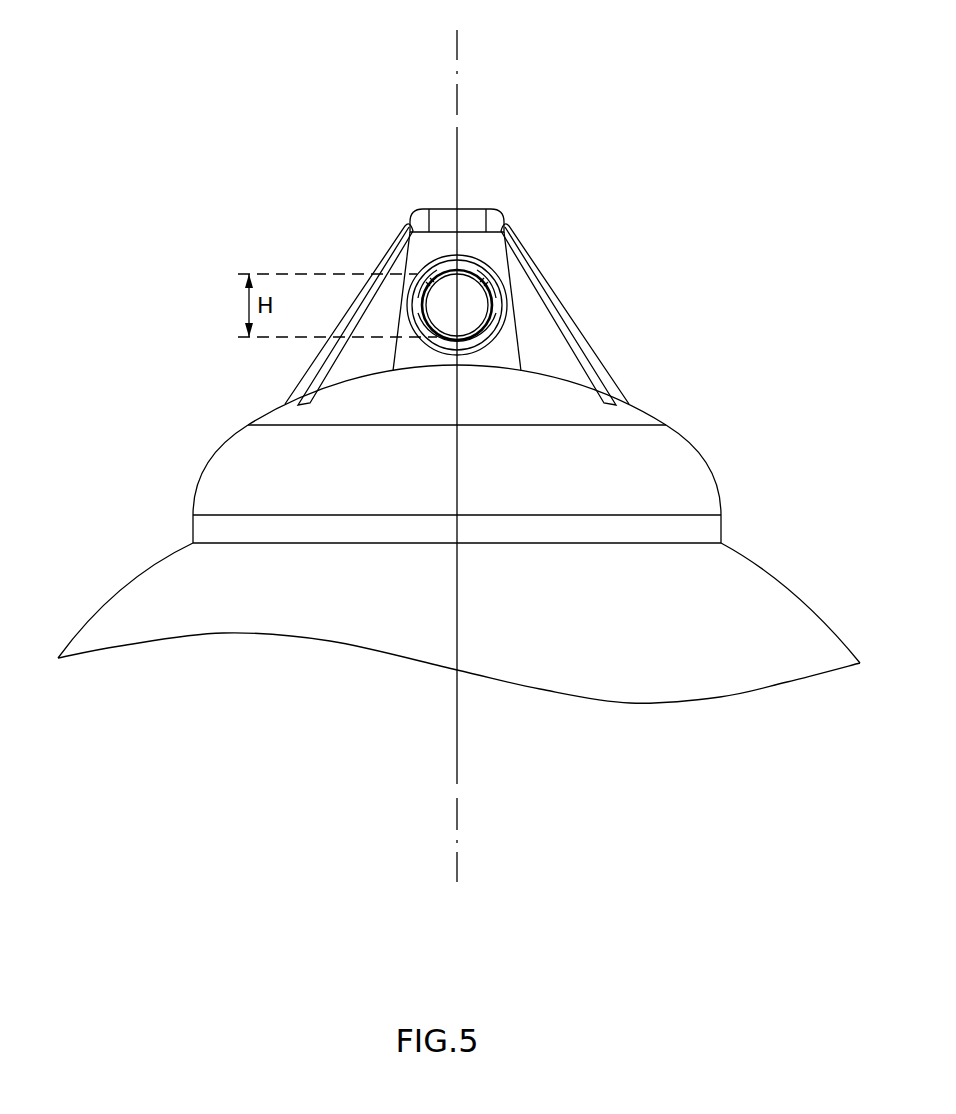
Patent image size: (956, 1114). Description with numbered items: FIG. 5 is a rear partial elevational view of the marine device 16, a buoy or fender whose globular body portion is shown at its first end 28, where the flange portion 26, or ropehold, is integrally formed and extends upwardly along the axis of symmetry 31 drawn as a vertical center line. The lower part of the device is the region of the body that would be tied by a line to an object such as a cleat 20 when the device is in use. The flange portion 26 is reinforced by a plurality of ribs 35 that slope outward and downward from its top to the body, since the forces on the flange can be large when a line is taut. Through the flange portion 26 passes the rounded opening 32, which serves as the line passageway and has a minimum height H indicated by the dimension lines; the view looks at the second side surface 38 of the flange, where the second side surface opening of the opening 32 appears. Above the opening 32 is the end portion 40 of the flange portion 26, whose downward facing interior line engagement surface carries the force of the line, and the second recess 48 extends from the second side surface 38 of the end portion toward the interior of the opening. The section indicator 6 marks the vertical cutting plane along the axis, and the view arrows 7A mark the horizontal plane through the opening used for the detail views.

The marine device 16 is at (242, 80).
The cleat 20 is at (112, 623).
The flange portion 26 is at (658, 314).
The first end 28 is at (735, 560).
The axis of symmetry 31 is at (457, 60).
The opening 32 is at (490, 327).
The ribs 35 is at (317, 383).
The second side surface 38 is at (443, 240).
The end portion 40 is at (472, 220).
The second recess 48 is at (463, 272).
The section line 6 is at (457, 127).
The section line 7A,7B 7A is at (457, 237).